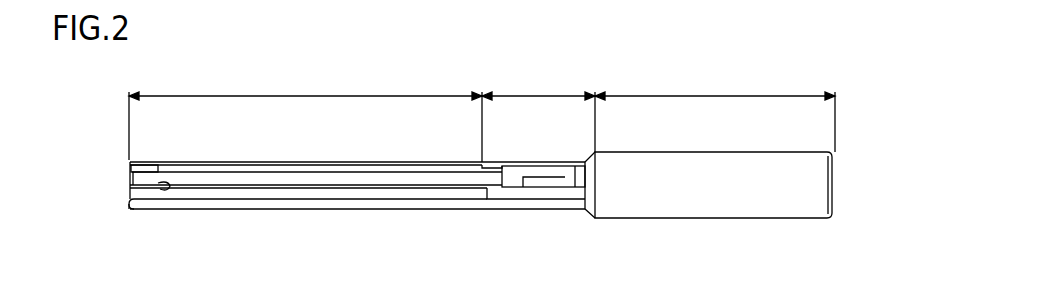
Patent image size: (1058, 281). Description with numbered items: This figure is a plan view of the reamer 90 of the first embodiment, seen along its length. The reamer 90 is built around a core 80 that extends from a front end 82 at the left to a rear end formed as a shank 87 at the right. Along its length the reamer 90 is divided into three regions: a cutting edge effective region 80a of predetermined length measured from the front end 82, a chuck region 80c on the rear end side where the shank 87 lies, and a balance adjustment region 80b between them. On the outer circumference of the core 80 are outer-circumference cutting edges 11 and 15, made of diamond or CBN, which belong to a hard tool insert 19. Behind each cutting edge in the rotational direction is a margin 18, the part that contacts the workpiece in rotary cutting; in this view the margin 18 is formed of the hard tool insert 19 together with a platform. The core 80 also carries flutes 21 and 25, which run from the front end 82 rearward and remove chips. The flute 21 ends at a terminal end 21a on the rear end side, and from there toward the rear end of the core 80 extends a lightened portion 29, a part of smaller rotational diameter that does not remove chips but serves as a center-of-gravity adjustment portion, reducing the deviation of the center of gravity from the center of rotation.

The outer-circumference cutting edge 11 is at (133, 180).
The margin 18 is at (145, 172).
The hard tool insert 19 is at (168, 189).
The front end 82 is at (130, 193).
The outer-circumference cutting edge 15 is at (140, 209).
The flute 21 is at (359, 185).
The flute 25 is at (358, 205).
The terminal end of flute 21a is at (567, 180).
The core 80 is at (557, 203).
The lightened portion 29 is at (572, 178).
The shank 87 is at (718, 220).
The reamer 90 is at (850, 108).
The cutting edge effective region 80a is at (305, 86).
The balance adjustment region 80b is at (538, 86).
The chuck region 80c is at (715, 86).